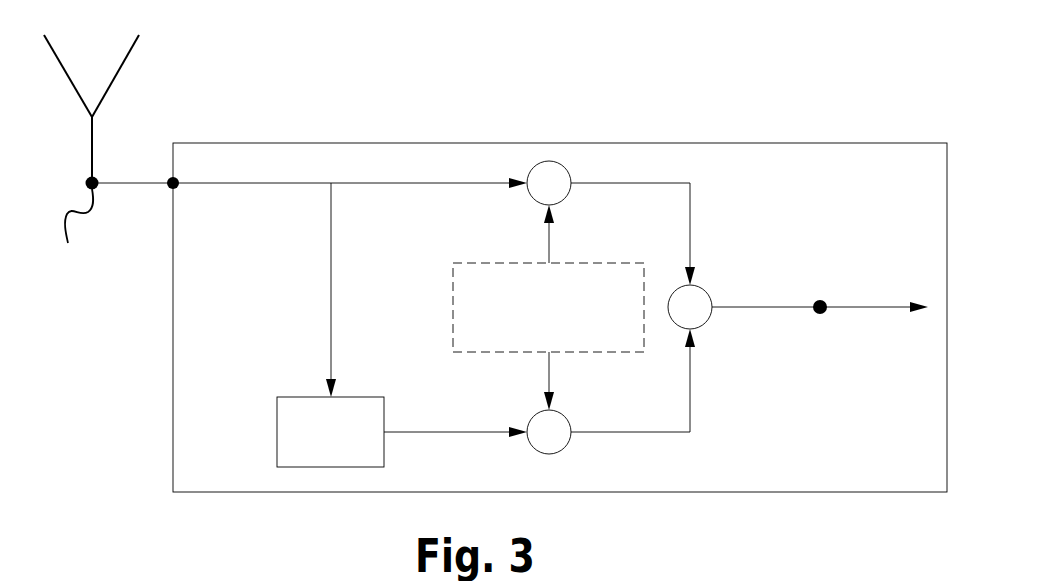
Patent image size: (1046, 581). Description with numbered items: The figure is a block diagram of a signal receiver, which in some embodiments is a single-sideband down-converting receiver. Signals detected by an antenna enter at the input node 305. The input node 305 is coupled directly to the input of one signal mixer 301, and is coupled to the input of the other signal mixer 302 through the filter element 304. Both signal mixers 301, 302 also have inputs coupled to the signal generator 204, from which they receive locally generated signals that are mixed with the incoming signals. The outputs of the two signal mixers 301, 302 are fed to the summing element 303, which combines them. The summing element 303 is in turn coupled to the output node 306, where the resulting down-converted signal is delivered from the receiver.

The signal generator 204 is at (453, 283).
The signal mixer 301 is at (548, 161).
The signal mixer 302 is at (547, 455).
The summing element 303 is at (705, 287).
The filter element 304 is at (277, 418).
The input node 305 is at (86, 181).
The output node 306 is at (820, 300).